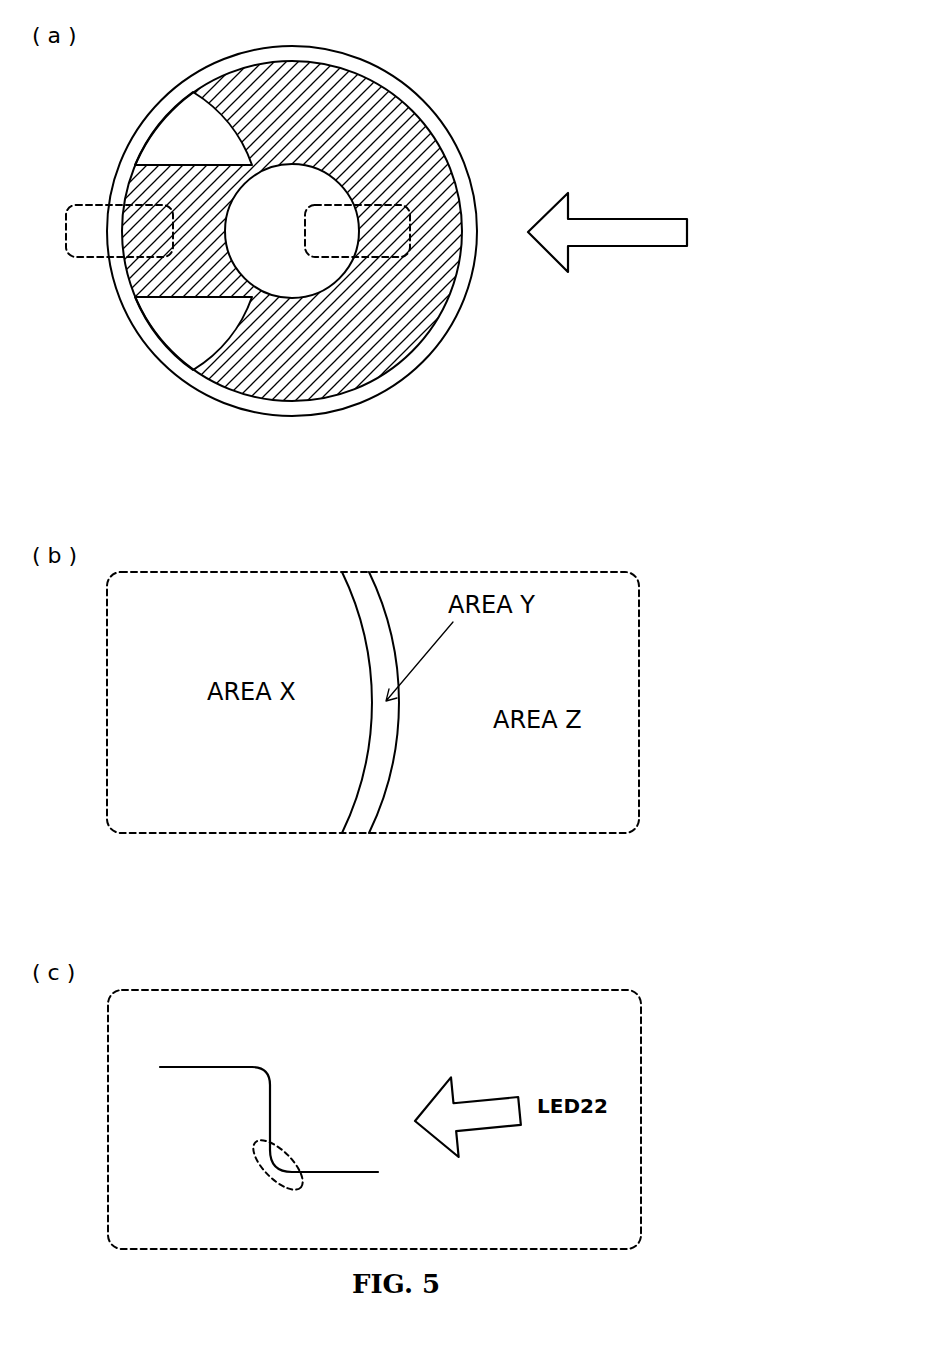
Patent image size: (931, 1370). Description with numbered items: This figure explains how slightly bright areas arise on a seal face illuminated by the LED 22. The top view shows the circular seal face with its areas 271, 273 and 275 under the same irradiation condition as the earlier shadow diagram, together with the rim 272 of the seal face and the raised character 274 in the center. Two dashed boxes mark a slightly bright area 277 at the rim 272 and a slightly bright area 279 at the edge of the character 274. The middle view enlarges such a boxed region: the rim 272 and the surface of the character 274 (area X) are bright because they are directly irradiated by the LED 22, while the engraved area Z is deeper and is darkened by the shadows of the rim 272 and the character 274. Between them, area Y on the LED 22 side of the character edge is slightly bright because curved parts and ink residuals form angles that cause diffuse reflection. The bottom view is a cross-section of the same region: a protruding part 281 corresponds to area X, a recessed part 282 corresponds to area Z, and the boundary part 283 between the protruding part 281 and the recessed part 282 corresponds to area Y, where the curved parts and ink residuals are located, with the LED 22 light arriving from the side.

The LED 22 is at (657, 232).
The area 271 is at (458, 177).
The rim of the seal face 272 is at (422, 115).
The area 273 is at (140, 190).
The character 274 is at (318, 193).
The area 275 is at (185, 113).
The slightly bright area 277 is at (108, 257).
The slightly bright area 279 is at (362, 248).
The protruding part 281 is at (228, 1082).
The recessed part 282 is at (337, 1170).
The boundary part 283 is at (278, 1147).